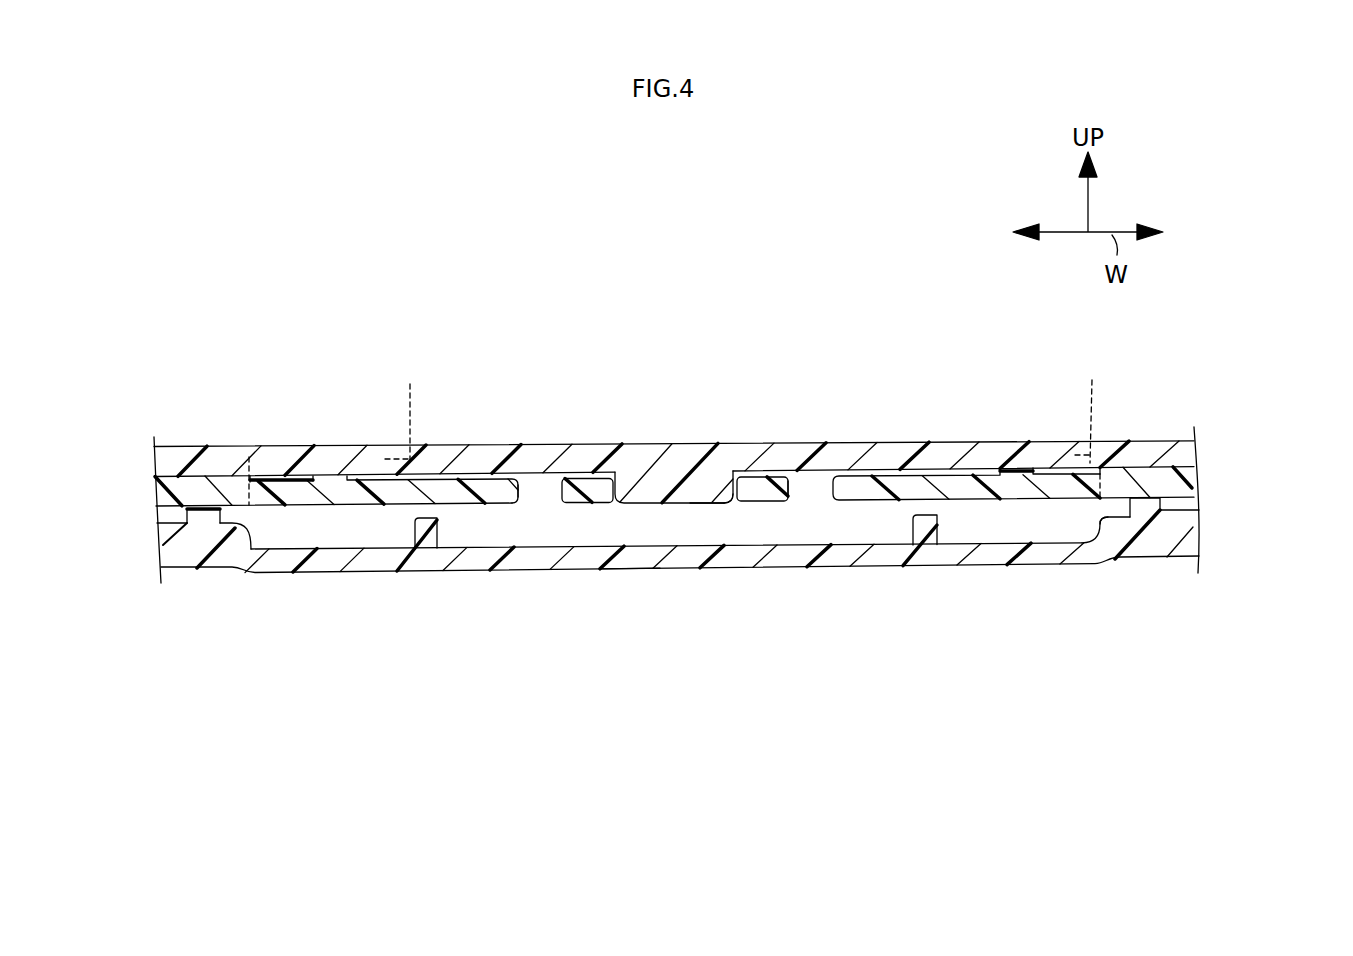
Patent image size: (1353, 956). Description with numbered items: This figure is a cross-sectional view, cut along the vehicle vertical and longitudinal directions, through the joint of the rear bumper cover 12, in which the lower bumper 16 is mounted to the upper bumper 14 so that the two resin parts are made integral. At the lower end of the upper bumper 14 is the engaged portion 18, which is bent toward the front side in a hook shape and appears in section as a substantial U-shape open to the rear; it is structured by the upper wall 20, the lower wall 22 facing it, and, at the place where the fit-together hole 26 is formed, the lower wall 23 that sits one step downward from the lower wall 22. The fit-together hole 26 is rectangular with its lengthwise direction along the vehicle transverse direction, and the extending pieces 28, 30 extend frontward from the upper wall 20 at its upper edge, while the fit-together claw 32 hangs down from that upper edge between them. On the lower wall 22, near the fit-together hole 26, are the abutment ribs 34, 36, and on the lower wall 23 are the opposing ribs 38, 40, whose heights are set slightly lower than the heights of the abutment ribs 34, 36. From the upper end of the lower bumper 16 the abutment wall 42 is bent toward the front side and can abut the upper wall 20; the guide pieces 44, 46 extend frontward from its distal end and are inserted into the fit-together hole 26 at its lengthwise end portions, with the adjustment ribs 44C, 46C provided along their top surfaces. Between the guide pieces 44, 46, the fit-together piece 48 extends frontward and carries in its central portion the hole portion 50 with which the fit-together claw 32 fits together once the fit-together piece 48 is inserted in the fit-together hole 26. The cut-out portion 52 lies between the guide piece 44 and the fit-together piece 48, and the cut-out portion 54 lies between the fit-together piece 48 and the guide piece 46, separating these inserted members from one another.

The rear bumper cover 12 is at (1214, 385).
The upper bumper 14 is at (594, 436).
The lower bumper 16 is at (475, 516).
The engaged portion 18 is at (833, 578).
The upper wall 20 is at (652, 457).
The lower wall 22 is at (190, 565).
The lower wall 23 is at (626, 567).
The fit-together hole 26 is at (1095, 522).
The extending piece 28 is at (405, 408).
The extending piece 30 is at (1097, 406).
The fit-together claw 32 is at (697, 490).
The abutment rib 34 is at (197, 509).
The abutment rib 36 is at (1163, 498).
The opposing rib 38 is at (417, 527).
The opposing rib 40 is at (937, 520).
The abutment wall 42 is at (181, 478).
The guide piece 44 is at (362, 484).
The adjustment rib 44C is at (315, 480).
The guide piece 46 is at (919, 484).
The adjustment rib 46C is at (1031, 469).
The fit-together piece 48 is at (762, 482).
The hole portion 50 is at (726, 490).
The cut-out portion 52 is at (518, 494).
The cut-out portion 54 is at (797, 490).